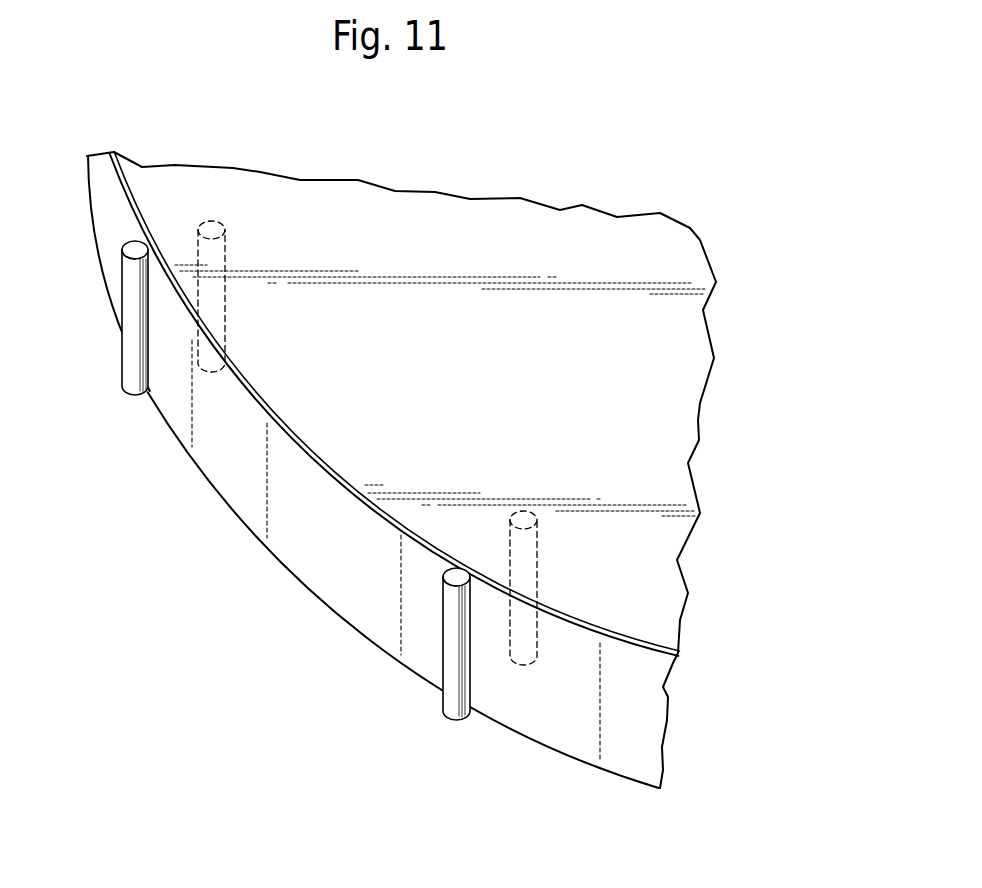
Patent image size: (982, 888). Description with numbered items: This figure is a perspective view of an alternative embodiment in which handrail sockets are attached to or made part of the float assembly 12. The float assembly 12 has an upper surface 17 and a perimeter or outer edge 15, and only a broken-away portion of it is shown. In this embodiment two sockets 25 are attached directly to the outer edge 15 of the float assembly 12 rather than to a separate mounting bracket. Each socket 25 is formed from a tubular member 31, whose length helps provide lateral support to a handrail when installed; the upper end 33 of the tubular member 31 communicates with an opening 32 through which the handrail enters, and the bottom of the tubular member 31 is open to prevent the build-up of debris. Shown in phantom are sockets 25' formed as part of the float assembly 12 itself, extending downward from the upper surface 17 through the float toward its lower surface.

The float assembly 12 is at (548, 193).
The perimeter or outer edge 15 is at (652, 713).
The upper surface 17 is at (675, 488).
The socket 25 is at (246, 436).
The socket 25' is at (383, 389).
The tubular member 31 is at (150, 282).
The opening 32 is at (133, 250).
The upper end 33 is at (120, 257).